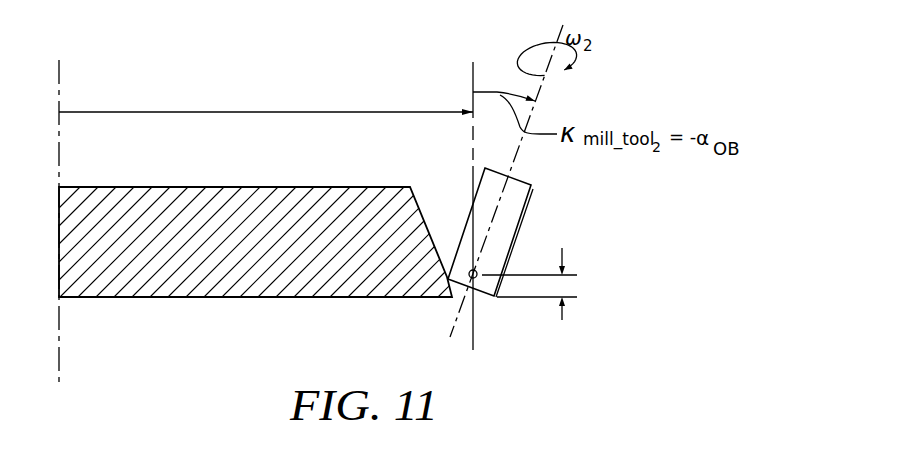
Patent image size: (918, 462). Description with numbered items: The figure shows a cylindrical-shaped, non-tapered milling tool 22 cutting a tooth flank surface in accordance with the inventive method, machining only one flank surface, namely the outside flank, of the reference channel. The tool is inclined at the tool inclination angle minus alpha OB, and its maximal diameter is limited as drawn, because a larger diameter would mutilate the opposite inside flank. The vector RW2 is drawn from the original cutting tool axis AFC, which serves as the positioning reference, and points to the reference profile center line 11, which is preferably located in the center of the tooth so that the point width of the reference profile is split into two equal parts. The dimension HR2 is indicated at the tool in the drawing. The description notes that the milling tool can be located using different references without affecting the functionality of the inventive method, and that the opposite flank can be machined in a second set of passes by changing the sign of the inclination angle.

The milling tool 22 is at (532, 217).
The reference profile center line 11 is at (476, 347).
The height dimension HR2 is at (548, 284).
The vector RW2 is at (278, 77).
The original cutting tool axis AFC is at (66, 250).